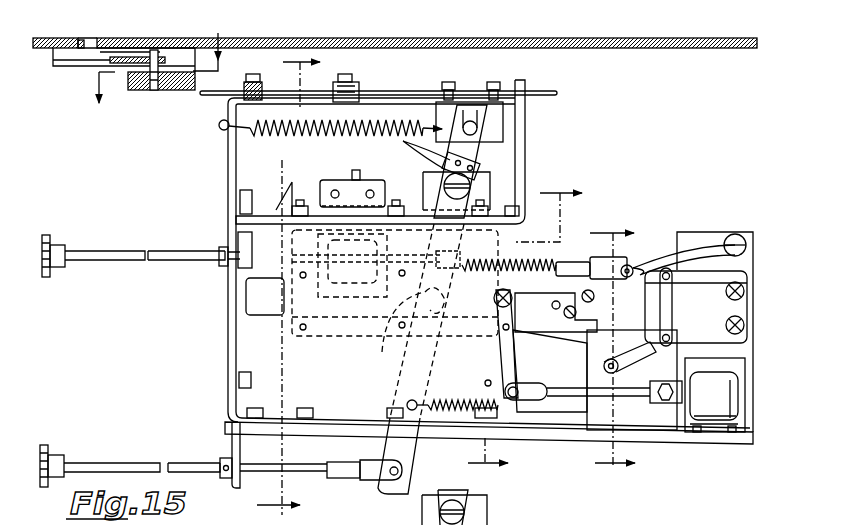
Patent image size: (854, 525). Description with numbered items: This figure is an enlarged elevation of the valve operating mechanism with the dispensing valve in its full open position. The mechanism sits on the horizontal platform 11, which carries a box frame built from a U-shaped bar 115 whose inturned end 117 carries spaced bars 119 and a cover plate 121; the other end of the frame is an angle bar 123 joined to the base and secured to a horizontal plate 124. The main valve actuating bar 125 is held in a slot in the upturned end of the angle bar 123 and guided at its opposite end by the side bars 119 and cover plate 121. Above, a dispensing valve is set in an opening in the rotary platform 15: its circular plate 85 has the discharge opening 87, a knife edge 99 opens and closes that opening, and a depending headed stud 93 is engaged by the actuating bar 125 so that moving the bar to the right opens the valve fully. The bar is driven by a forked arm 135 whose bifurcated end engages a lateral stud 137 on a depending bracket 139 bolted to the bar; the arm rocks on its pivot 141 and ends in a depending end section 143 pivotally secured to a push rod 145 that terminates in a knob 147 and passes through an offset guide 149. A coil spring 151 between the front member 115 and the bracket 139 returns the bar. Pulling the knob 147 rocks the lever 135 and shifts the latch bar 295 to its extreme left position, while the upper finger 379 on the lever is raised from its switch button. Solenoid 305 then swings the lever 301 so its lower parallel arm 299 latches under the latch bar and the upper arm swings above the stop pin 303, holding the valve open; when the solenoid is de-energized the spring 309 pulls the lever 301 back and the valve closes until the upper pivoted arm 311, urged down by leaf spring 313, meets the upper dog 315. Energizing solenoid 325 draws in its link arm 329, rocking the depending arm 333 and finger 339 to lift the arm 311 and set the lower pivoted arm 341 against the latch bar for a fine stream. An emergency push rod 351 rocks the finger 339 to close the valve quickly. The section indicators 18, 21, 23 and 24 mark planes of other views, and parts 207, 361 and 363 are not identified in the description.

The horizontal platform 11 is at (514, 433).
The rotary platform 15 is at (470, 36).
The section line 18 is at (159, 57).
The section line 21 is at (270, 286).
The section line 23 is at (595, 341).
The section line 24 is at (505, 324).
The circular plate 85 is at (122, 30).
The discharge opening 87 is at (82, 40).
The depending headed stud 93 is at (153, 88).
The knife edge 99 is at (178, 30).
The U-shaped bar 115 is at (229, 186).
The inturned end 117 is at (330, 120).
The spaced bars 119 is at (360, 78).
The cover plate 121 is at (305, 84).
The angle bar 123 is at (277, 212).
The horizontal plate 124 is at (522, 232).
The valve actuating bar 125 is at (558, 93).
The forked arm 135 is at (478, 147).
The lateral stud 137 is at (471, 118).
The depending bracket 139 is at (522, 92).
The pivot 141 is at (460, 178).
The depending end section 143 is at (388, 452).
The push rod 145 is at (378, 481).
The knob 147 is at (49, 445).
The offset guide 149 is at (232, 454).
The coil spring 151 is at (395, 135).
The link 207 is at (673, 302).
The latch bar 295 is at (390, 342).
The lower parallel arm 299 is at (494, 302).
The lever 301 is at (495, 345).
The stop pin 303 is at (568, 303).
The solenoid 305 is at (715, 357).
The spring 309 is at (452, 397).
The upper pivoted arm 311 is at (700, 282).
The leaf spring 313 is at (663, 307).
The upper dog 315 is at (628, 265).
The solenoid 325 is at (349, 272).
The link arm 329 is at (585, 280).
The depending arm 333 is at (663, 325).
The finger 339 is at (618, 360).
The lower pivoted arm 341 is at (748, 345).
The push rod 351 is at (100, 240).
The stud 361 is at (357, 176).
The box 363 is at (342, 185).
The upper finger 379 is at (397, 200).